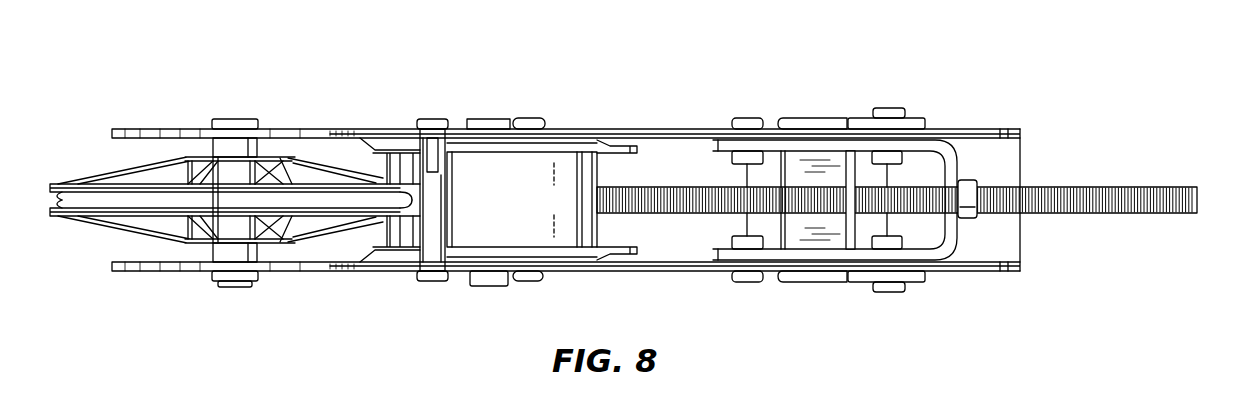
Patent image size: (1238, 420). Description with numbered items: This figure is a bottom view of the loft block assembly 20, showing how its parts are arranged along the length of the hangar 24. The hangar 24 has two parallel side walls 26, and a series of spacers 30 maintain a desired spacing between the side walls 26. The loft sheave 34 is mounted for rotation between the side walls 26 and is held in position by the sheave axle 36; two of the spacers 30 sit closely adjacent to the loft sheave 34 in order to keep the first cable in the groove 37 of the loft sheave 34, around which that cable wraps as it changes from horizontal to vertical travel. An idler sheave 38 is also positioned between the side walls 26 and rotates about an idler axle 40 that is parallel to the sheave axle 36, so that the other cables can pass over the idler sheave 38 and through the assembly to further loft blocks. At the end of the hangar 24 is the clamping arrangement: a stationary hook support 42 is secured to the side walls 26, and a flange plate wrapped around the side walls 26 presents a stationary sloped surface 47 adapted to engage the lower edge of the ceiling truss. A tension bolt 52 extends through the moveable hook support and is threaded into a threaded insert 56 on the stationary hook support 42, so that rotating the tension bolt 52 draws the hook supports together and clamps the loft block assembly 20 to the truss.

The loft block assembly 20 is at (748, 70).
The hangar 24 is at (308, 129).
The side walls 26 is at (160, 129).
The spacers 30 is at (428, 237).
The loft sheave 34 is at (60, 184).
The sheave axle 36 is at (235, 119).
The groove 37 is at (62, 208).
The idler sheave 38 is at (490, 178).
The idler axle 40 is at (490, 287).
The stationary hook support 42 is at (962, 160).
The stationary sloped surface 47 is at (813, 172).
The tension bolt 52 is at (688, 186).
The threaded insert 56 is at (968, 178).